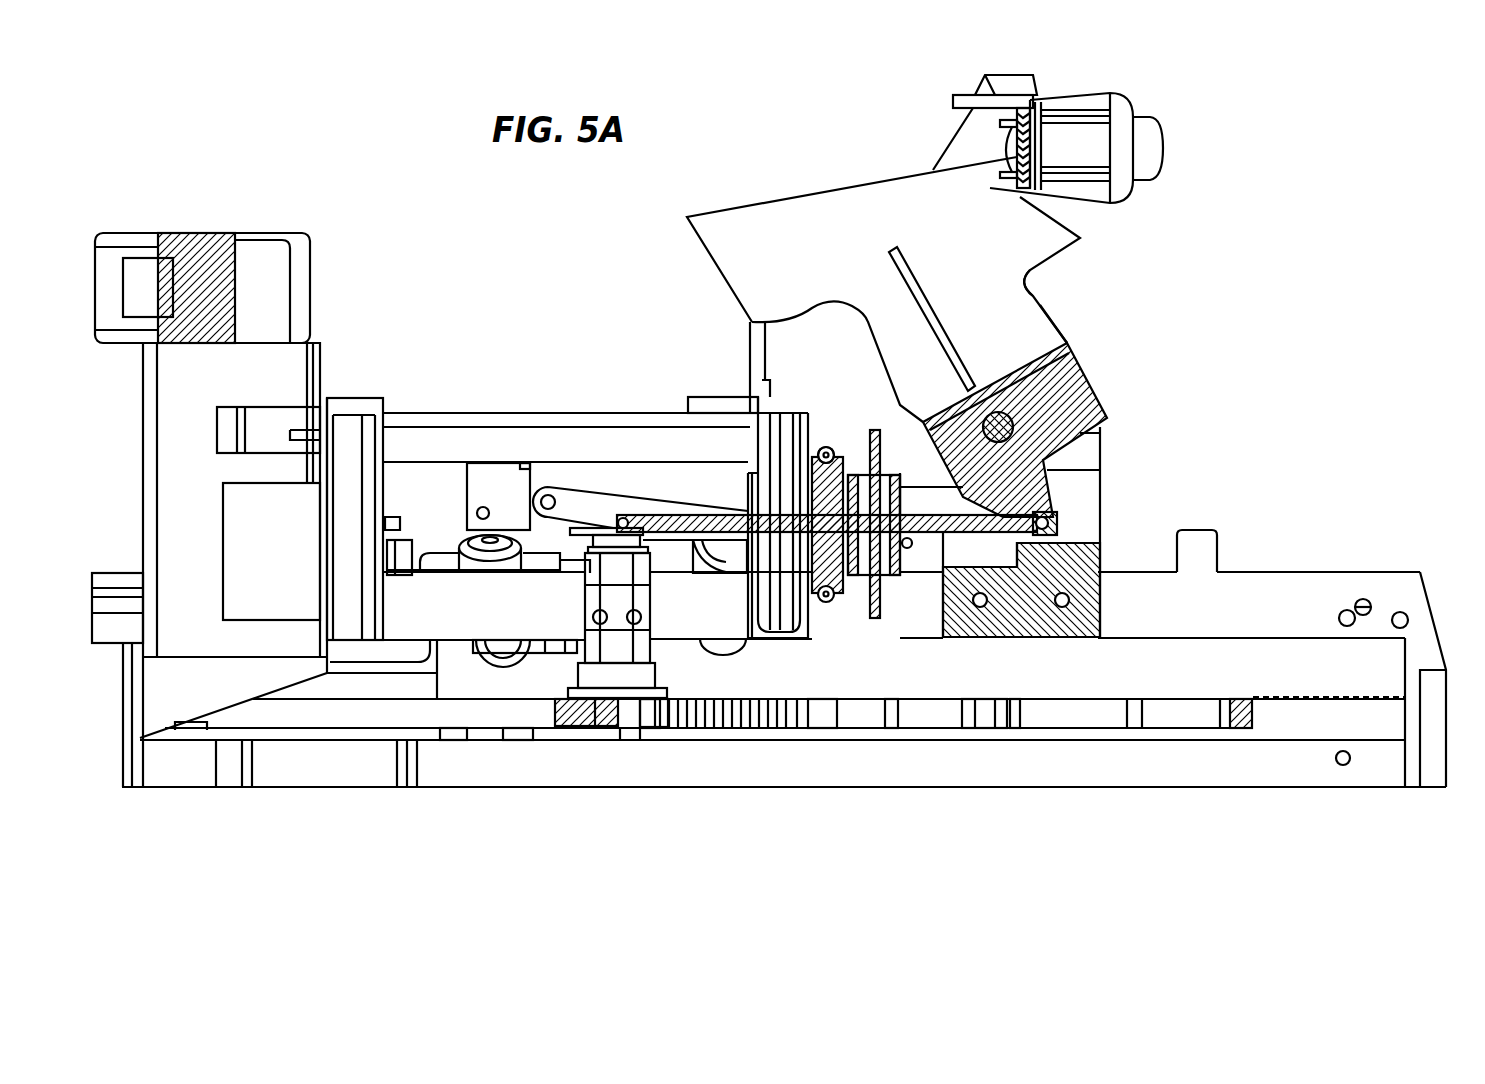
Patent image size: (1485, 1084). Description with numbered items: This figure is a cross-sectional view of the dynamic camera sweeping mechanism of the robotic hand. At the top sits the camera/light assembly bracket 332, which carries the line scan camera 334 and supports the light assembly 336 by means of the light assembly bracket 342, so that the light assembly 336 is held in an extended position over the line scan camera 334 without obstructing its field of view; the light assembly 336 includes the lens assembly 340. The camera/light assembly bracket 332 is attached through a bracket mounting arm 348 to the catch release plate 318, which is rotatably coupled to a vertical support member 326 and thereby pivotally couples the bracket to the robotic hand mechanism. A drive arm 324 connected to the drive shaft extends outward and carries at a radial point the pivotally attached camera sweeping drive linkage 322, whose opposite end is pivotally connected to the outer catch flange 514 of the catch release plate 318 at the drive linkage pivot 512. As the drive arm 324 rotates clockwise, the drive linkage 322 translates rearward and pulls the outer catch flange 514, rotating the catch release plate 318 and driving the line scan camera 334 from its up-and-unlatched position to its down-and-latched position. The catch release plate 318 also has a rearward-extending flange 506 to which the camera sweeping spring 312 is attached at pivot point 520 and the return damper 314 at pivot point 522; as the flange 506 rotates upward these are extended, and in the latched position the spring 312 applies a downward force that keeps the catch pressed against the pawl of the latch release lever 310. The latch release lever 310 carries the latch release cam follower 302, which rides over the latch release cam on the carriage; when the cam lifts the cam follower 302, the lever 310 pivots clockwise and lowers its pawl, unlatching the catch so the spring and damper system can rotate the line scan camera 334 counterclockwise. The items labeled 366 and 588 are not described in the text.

The latch release cam follower 302 is at (548, 495).
The latch release lever 310 is at (583, 488).
The drive arm 324 is at (612, 525).
The camera sweeping drive linkage 322 is at (705, 516).
The line scan camera 334 is at (756, 330).
The camera/light assembly bracket 332 is at (812, 188).
The bracket mounting arm 348 is at (1014, 300).
The arm edge 366 is at (1068, 354).
The light assembly bracket 342 is at (935, 150).
The lens assembly 340 is at (1155, 130).
The light assembly 336 is at (962, 72).
The catch release plate 318 is at (1097, 388).
The outer catch flange 514 is at (1060, 483).
The drive linkage pivot 512 is at (1047, 522).
The vertical support member 326 is at (1100, 560).
The camera sweeping spring 312 is at (818, 598).
The flange 506 is at (1100, 442).
The pivot point 520 is at (826, 446).
The pivot point 522 is at (875, 430).
The return damper 314 is at (895, 578).
The pin 588 is at (908, 550).